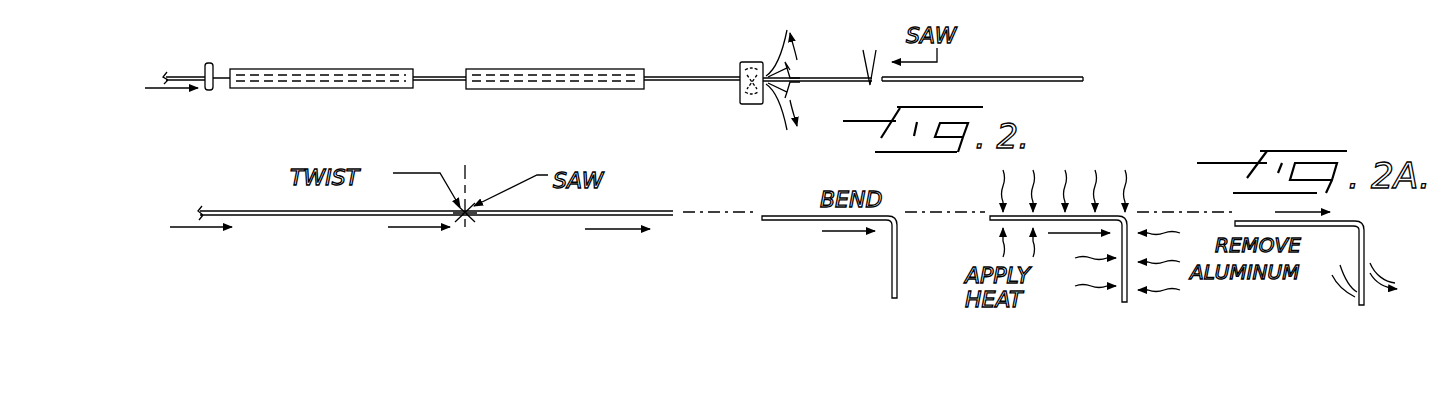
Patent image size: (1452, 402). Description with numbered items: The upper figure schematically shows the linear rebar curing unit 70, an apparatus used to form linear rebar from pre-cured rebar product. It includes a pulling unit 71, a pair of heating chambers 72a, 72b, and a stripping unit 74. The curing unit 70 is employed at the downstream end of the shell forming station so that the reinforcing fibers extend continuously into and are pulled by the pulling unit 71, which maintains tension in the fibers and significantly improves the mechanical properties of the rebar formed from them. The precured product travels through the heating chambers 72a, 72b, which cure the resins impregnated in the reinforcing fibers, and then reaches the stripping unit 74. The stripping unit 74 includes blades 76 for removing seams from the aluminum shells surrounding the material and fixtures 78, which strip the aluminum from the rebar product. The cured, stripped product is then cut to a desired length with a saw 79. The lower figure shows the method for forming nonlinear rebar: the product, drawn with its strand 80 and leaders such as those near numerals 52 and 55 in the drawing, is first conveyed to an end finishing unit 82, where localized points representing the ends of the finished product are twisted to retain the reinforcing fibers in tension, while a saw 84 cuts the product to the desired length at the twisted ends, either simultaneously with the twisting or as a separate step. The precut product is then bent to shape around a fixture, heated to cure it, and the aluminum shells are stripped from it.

In FIG. 2, the optical fiber 52 is at (300, 0).
In FIG. 2, the fiber coating 55 is at (312, 6).
In FIG. 2, the linear rebar curing unit 70 is at (220, 52).
In FIG. 2, the pulling unit 71 is at (210, 90).
In FIG. 2, the heating chamber 72a is at (406, 69).
In FIG. 2, the heating chamber 72b is at (578, 70).
In FIG. 2, the stripping unit 74 is at (750, 105).
In FIG. 2, the blades 76 is at (735, 72).
In FIG. 2, the fixtures 78 is at (792, 66).
In FIG. 2, the saw 79 is at (876, 60).
In FIG. 2A, the aluminum coated fiber 80 is at (332, 260).
In FIG. 2A, the end finishing unit 82 is at (378, 226).
In FIG. 2A, the saw 84 is at (470, 216).